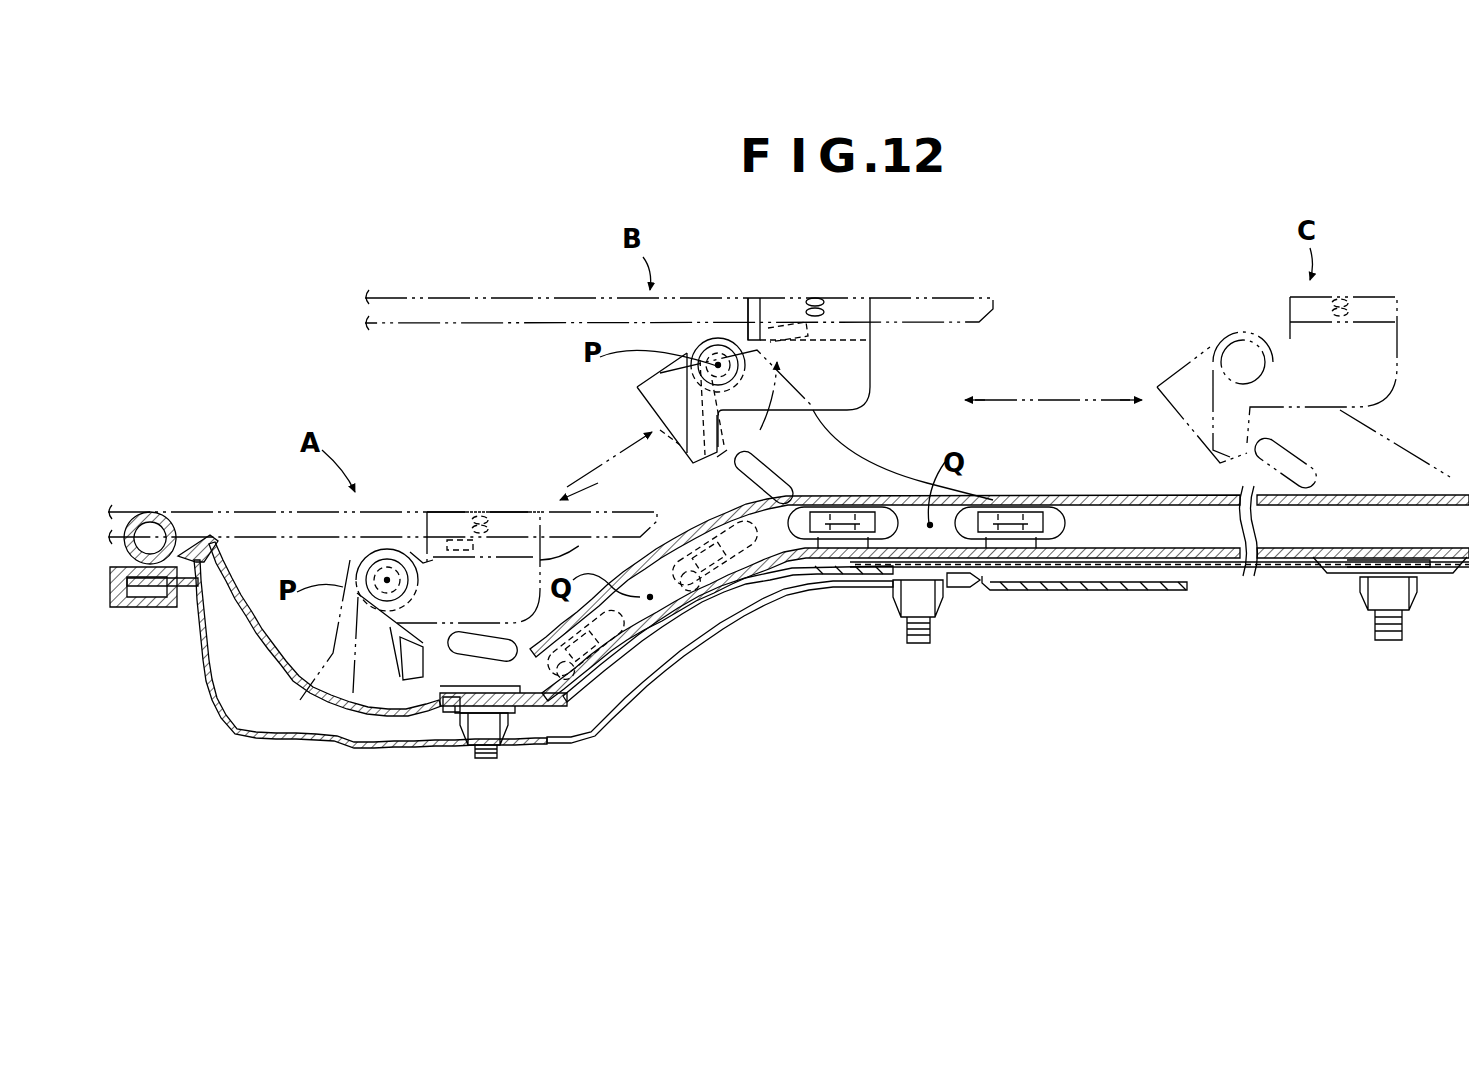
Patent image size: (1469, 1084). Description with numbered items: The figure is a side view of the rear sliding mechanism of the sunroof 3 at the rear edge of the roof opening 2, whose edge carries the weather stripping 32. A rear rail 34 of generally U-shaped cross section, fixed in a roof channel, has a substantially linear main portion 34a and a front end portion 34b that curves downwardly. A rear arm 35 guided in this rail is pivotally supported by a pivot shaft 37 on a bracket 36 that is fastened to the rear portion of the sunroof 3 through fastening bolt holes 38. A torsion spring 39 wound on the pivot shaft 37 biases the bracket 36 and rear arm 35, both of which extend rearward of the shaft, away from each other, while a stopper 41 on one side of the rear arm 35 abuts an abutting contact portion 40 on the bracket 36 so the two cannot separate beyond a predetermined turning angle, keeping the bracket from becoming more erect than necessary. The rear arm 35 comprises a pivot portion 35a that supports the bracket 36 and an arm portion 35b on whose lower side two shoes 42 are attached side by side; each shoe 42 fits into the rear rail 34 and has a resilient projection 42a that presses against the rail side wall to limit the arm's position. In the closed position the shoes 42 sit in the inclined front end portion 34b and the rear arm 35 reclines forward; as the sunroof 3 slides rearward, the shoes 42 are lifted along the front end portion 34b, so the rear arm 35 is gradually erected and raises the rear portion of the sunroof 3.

The opening 2 is at (170, 700).
The sunroof 3 is at (462, 298).
The weather stripping 32 is at (113, 600).
The rear rail 34 is at (1100, 490).
The main portion 34a is at (1172, 590).
The front end portion 34b is at (693, 650).
The rear arm 35 is at (638, 407).
The pivot portion 35a is at (640, 400).
The arm portion 35b is at (853, 452).
The bracket 36 is at (855, 305).
The pivot shaft 37 is at (700, 355).
The fastening bolt holes 38 is at (815, 298).
The torsion spring 39 is at (750, 330).
The abutting contact portion 40 is at (330, 758).
The stopper 41 is at (745, 467).
The shoe 42 is at (648, 685).
The resilient projection 42a is at (830, 530).